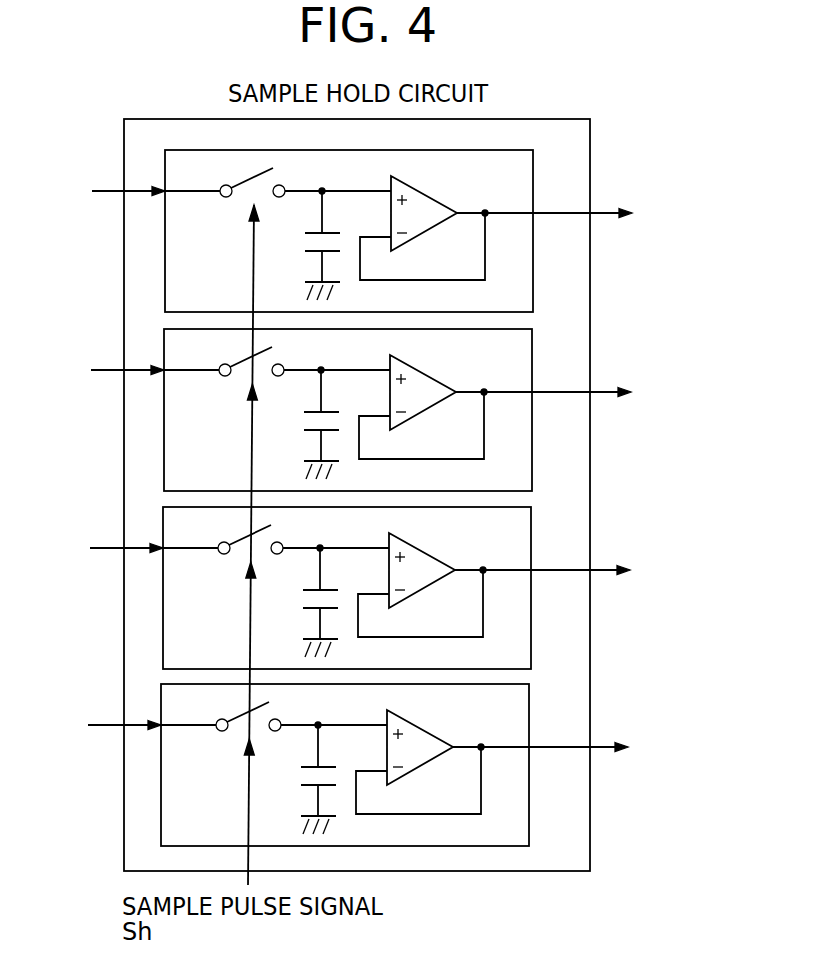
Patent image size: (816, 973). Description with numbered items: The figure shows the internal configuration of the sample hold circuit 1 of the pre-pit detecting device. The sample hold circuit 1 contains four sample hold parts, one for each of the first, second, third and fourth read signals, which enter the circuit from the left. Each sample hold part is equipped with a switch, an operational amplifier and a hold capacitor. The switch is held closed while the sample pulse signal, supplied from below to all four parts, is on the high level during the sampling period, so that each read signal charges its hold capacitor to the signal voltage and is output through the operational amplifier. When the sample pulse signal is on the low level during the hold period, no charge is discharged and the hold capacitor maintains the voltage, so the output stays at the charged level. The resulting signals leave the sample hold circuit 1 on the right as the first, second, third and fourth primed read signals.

The sample hold circuit 1 is at (543, 119).